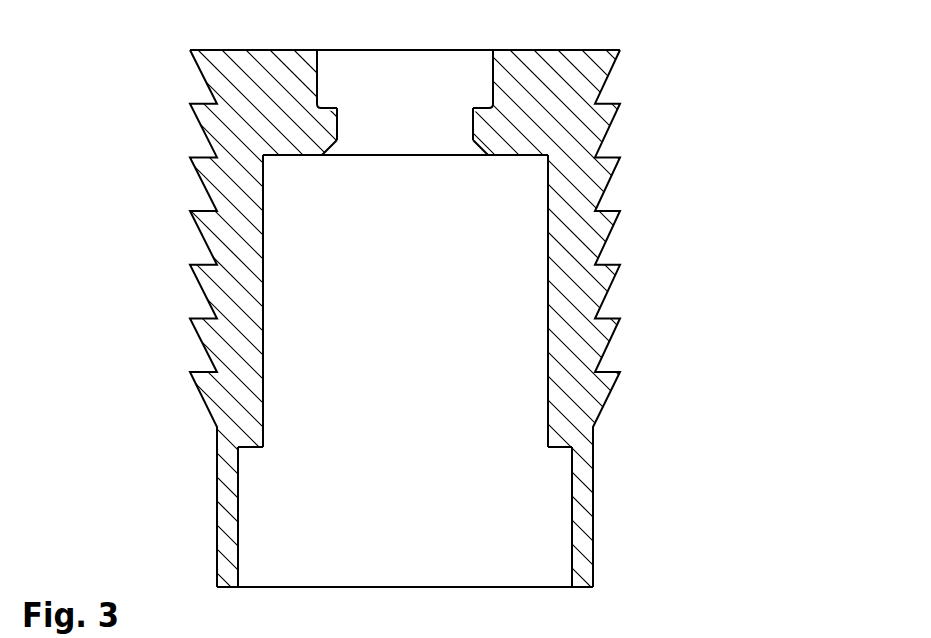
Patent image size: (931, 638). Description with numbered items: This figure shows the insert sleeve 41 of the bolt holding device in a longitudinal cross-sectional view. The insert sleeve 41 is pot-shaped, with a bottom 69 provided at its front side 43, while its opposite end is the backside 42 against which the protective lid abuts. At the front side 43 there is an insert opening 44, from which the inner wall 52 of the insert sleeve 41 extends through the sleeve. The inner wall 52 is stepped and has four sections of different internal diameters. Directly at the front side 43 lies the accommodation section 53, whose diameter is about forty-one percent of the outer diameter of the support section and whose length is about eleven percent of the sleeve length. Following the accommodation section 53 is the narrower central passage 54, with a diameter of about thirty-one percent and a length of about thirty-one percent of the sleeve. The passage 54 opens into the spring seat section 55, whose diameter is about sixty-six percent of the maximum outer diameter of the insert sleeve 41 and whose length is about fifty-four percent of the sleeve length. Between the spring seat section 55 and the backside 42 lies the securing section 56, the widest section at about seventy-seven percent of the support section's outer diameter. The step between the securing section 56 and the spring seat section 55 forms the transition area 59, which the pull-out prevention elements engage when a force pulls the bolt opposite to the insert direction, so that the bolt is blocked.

The insert sleeve 41 is at (188, 249).
The backside 42 is at (583, 585).
The front side 43 is at (565, 48).
The insert opening 44 is at (493, 80).
The inner wall 52 is at (263, 342).
The accommodation section 53 is at (317, 70).
The central passage 54 is at (335, 130).
The spring seat section 55 is at (263, 295).
The securing section 56 is at (238, 490).
The transition area 59 is at (557, 447).
The bottom 69 is at (533, 112).